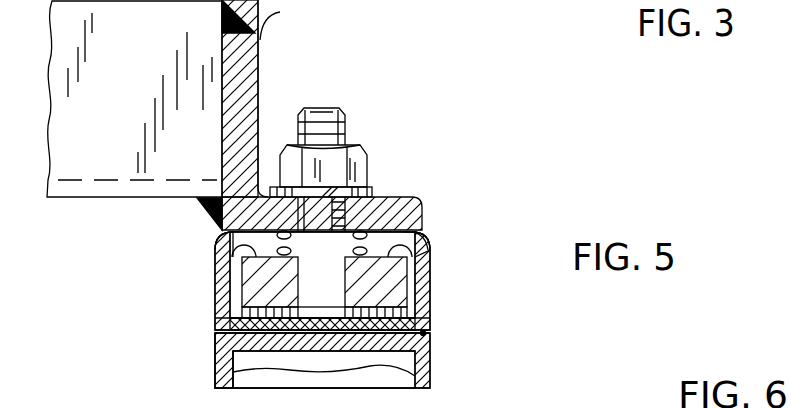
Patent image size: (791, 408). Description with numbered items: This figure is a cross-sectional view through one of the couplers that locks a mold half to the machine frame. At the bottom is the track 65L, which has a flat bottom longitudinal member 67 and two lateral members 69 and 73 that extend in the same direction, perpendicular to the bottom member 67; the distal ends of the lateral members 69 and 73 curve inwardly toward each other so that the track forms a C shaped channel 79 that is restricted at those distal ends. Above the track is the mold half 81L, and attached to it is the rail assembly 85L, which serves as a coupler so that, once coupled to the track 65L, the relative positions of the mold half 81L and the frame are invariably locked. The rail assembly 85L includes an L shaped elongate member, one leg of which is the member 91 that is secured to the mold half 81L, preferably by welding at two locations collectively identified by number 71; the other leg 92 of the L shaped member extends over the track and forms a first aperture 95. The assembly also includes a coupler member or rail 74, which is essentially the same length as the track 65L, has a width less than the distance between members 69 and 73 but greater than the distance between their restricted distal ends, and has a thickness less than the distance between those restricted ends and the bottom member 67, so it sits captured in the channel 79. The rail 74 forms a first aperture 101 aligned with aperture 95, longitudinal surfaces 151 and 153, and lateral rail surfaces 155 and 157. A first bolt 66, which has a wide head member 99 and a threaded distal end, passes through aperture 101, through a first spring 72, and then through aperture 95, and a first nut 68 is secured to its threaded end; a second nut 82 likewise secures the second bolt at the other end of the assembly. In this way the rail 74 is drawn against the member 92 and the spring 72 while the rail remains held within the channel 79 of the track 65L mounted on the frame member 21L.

The mold half 81L is at (141, 67).
The weld locations 71 is at (197, 201).
The member of L shaped member 91 is at (258, 88).
The bracket leg 92 is at (393, 210).
The first bolt 66 is at (300, 113).
The first nut 68 is at (328, 167).
The first spring 72 is at (383, 197).
The lateral member 73 is at (432, 280).
The lateral member 69 is at (227, 295).
The C shaped channel 79 is at (433, 263).
The coupler member or rail 74 is at (426, 234).
The longitudinal surface 151 is at (232, 244).
The first aperture 95 is at (225, 230).
The first aperture 101 is at (223, 283).
The lateral rail surface 157 is at (415, 300).
The lateral rail surface 155 is at (227, 308).
The wide head member 99 is at (223, 330).
The track 65L is at (425, 322).
The longitudinal surface 153 is at (423, 333).
The left frame member 21L is at (420, 370).
The flat bottom longitudinal member 67 is at (222, 365).
The second nut 82 is at (262, 32).
The rail assembly 85L is at (332, 46).